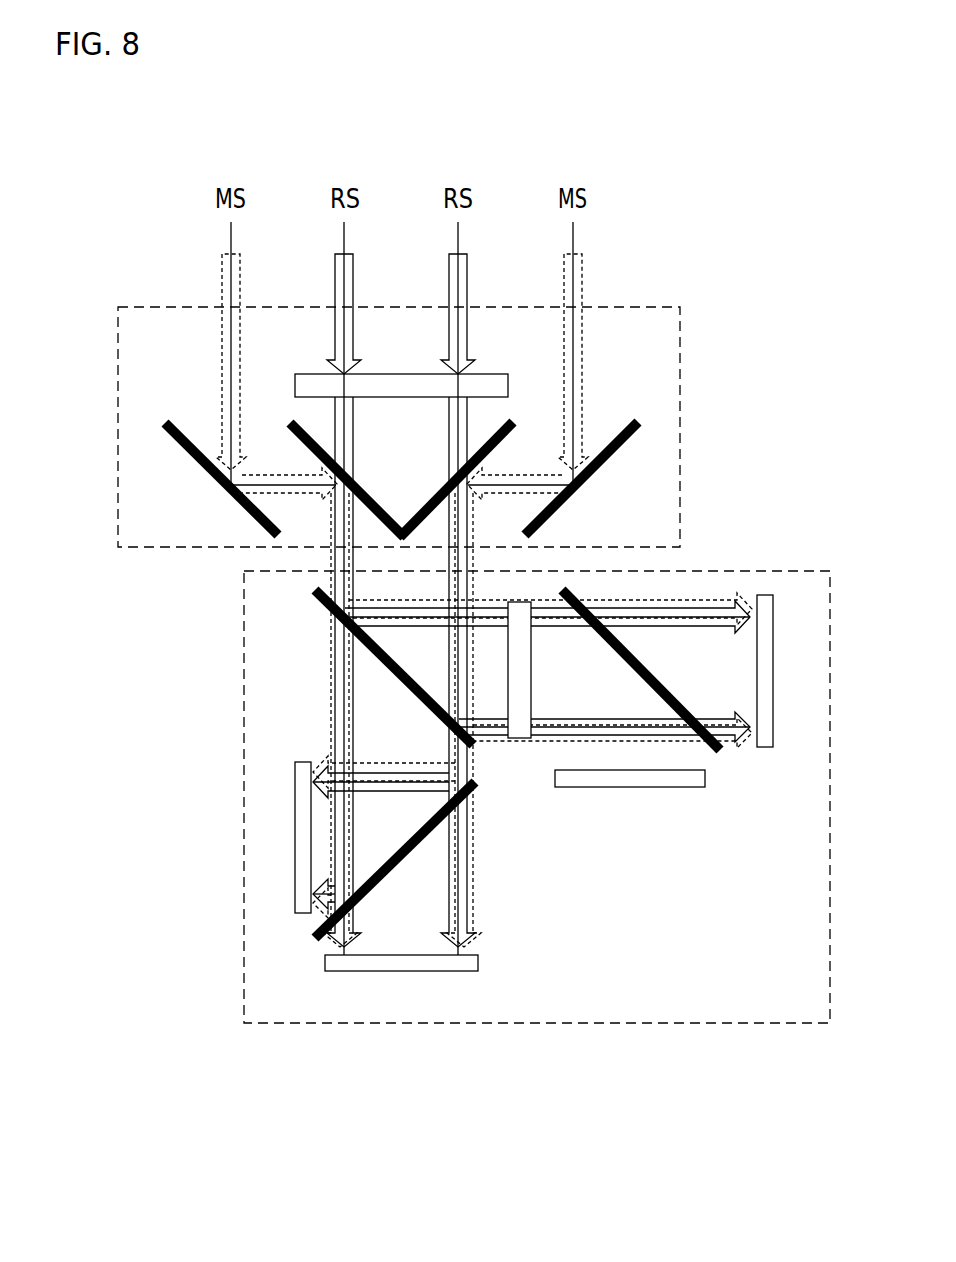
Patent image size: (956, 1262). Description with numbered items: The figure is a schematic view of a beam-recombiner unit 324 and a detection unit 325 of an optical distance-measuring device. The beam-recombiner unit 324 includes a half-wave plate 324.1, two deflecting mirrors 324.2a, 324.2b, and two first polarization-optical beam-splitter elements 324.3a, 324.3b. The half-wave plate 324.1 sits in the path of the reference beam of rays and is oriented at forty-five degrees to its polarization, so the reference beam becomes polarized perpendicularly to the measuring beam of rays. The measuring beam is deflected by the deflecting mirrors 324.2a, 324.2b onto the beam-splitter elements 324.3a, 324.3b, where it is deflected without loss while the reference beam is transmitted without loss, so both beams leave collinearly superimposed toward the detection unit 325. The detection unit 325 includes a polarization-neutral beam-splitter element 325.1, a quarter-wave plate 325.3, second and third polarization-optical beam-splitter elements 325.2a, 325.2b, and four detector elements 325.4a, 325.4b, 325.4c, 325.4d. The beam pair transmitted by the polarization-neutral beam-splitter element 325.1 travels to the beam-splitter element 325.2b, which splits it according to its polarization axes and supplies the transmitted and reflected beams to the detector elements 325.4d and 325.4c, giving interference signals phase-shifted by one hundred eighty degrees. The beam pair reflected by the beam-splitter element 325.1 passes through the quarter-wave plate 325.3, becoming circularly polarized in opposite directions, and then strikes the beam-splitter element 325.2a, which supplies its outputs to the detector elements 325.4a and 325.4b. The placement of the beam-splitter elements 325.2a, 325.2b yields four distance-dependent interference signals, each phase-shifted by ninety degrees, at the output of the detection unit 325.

The beam-recombiner unit 324 is at (680, 382).
The lambda/2 plate 324.1 is at (486, 384).
The deflecting mirror 324.2a is at (252, 514).
The deflecting mirror 324.2b is at (620, 462).
The first polarization-optical beam-splitter element 324.3a is at (290, 423).
The first polarization-optical beam-splitter element 324.3b is at (508, 438).
The detection unit 325 is at (720, 1023).
The polarization-neutral beam-splitter element 325.1 is at (385, 660).
The second polarization-optical beam-splitter element 325.2a is at (637, 650).
The first polarization-optical beam-splitter element 325.2b is at (407, 858).
The lambda/4 plate 325.3 is at (512, 743).
The detector element 325.4a is at (760, 747).
The detector element 325.4b is at (643, 777).
The detector element 325.4c is at (305, 842).
The detector element 325.4d is at (418, 962).